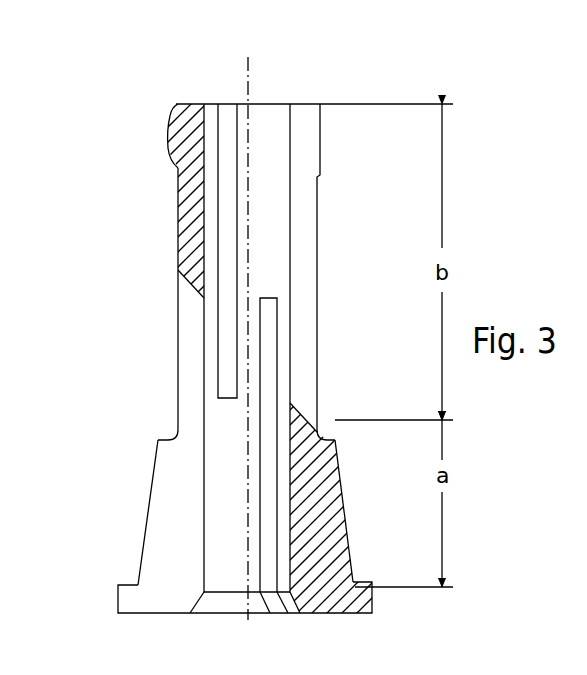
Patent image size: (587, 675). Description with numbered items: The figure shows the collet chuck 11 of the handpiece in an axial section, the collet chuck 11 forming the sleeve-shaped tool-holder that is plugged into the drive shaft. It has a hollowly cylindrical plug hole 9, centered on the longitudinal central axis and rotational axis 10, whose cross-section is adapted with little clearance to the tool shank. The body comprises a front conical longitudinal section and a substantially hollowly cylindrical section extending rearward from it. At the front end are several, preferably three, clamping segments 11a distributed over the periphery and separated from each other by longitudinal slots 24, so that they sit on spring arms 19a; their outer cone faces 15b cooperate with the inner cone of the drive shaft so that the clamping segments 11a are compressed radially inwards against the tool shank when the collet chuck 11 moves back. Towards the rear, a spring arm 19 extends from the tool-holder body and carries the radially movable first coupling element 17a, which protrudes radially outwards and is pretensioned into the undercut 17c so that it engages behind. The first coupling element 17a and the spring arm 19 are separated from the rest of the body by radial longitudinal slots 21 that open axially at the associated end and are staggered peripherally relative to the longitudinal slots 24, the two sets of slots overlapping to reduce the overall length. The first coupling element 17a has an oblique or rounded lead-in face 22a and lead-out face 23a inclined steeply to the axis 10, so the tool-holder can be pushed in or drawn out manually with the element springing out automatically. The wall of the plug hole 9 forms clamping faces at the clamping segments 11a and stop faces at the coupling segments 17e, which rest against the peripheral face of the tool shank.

The plug hole 9 is at (213, 104).
The longitudinal central axis and rotational axis 10 is at (248, 72).
The collet chuck 11 is at (132, 342).
The clamping segments 11a is at (153, 532).
The outer cone faces 15b is at (353, 542).
The first coupling element 17a is at (169, 140).
The undercut 17c is at (172, 185).
The coupling segments 17e is at (187, 252).
The spring arm 19 is at (178, 276).
The spring arms 19a is at (186, 393).
The longitudinal slots 21 is at (223, 245).
The lead-in face 22a is at (176, 107).
The lead-out face 23a is at (172, 160).
The longitudinal slots 24 is at (170, 488).